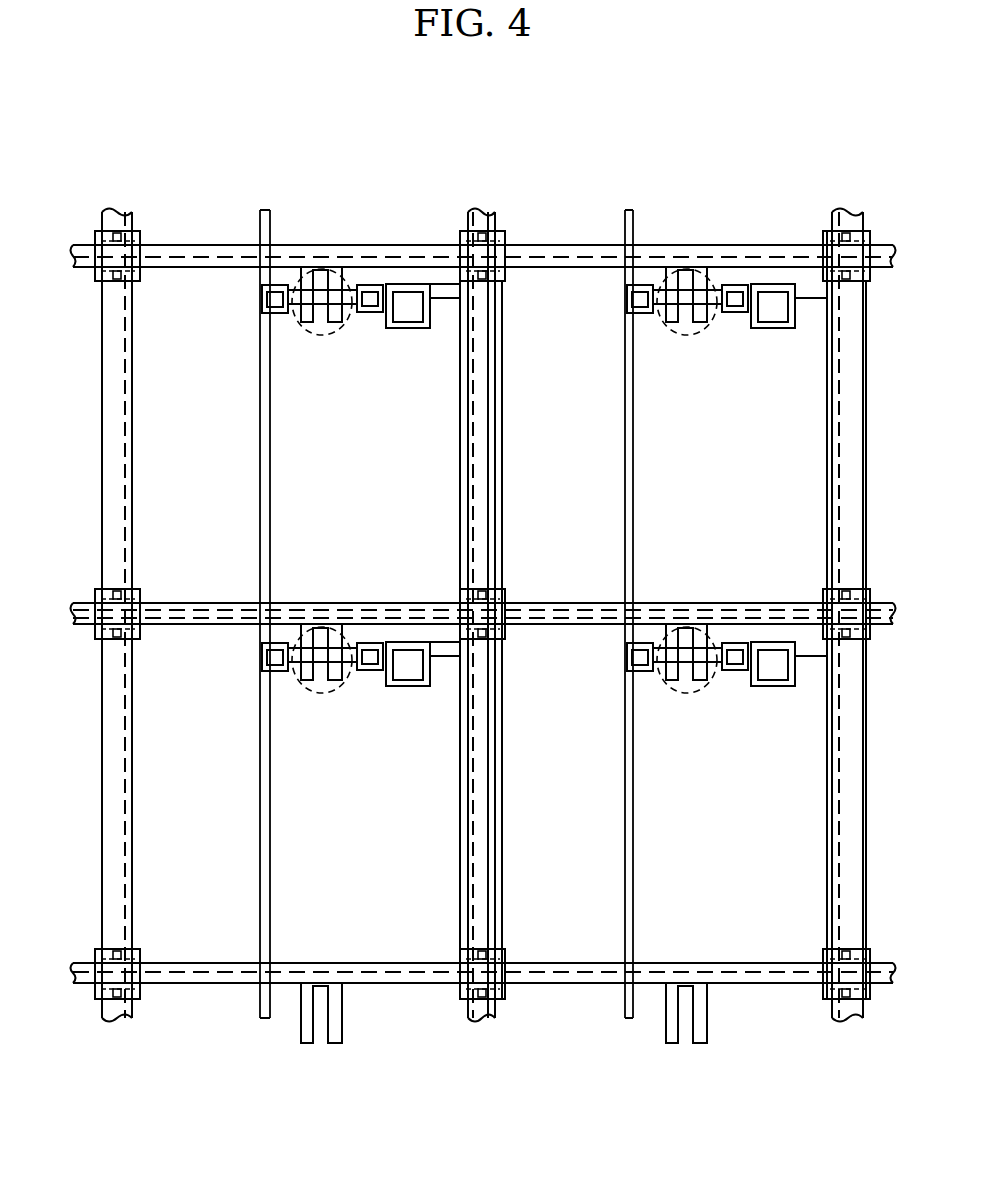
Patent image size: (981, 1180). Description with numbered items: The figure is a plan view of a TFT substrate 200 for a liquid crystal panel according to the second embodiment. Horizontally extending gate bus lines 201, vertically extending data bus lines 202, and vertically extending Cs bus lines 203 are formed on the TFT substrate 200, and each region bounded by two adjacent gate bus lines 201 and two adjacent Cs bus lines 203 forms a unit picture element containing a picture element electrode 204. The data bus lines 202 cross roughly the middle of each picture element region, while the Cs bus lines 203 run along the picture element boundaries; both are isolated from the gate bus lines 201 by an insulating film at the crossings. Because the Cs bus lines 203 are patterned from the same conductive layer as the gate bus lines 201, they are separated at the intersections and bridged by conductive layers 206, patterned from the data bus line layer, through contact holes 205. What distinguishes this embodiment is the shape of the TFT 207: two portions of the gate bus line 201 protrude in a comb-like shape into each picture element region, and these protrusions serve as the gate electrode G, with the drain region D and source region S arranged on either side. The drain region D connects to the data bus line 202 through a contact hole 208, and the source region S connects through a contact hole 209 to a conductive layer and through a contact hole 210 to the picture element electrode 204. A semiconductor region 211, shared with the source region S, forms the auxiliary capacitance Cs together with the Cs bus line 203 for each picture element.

The TFT substrate 200 is at (102, 153).
The gate bus line 201 is at (170, 245).
The data bus line 202 is at (633, 485).
The Cs bus line 203 is at (484, 224).
The picture element electrode 204 is at (236, 250).
The contact hole 205 is at (487, 234).
The conductive layer 206 is at (506, 243).
The TFT 207 is at (295, 334).
The contact hole 208 is at (262, 298).
The contact hole 209 is at (372, 303).
The contact hole 210 is at (410, 313).
The semiconductor region 211 is at (460, 496).
The gate electrode G is at (310, 297).
The drain region D is at (296, 320).
The source region S is at (336, 322).
The auxiliary capacitance Cs is at (489, 433).